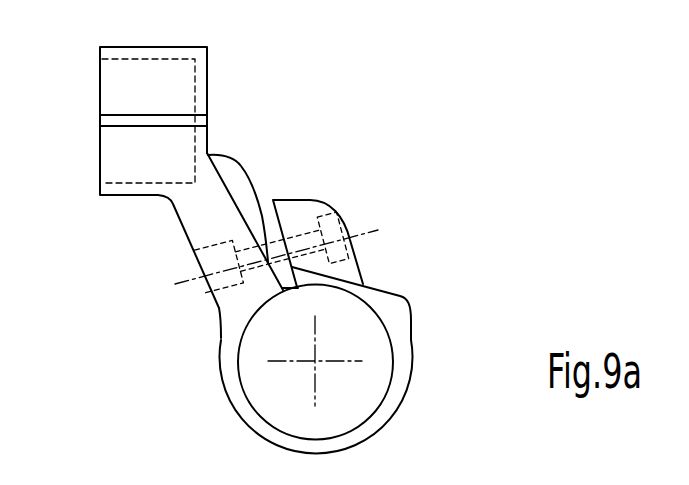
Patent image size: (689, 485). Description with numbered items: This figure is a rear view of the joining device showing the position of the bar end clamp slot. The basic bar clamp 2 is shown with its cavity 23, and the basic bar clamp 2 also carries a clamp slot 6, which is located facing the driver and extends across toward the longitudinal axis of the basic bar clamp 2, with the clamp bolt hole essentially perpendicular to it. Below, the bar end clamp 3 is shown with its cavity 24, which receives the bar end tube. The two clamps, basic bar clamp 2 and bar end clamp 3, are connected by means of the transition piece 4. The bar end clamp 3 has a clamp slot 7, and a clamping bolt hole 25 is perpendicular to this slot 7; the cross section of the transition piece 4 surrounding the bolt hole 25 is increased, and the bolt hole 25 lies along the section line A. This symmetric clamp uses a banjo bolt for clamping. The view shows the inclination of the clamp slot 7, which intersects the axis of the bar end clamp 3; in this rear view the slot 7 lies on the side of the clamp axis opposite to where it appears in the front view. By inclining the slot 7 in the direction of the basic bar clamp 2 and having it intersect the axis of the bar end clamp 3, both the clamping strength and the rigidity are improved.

The basic bar clamp 2 is at (125, 47).
The cavity 23 is at (112, 78).
The clamp slot 6 is at (110, 118).
The transition piece 4 is at (190, 230).
The clamp slot 7 is at (272, 218).
The clamping bolt hole 25 is at (350, 249).
The bar end clamp 3 is at (415, 340).
The cavity 24 is at (262, 392).
The clamping screw A is at (363, 232).